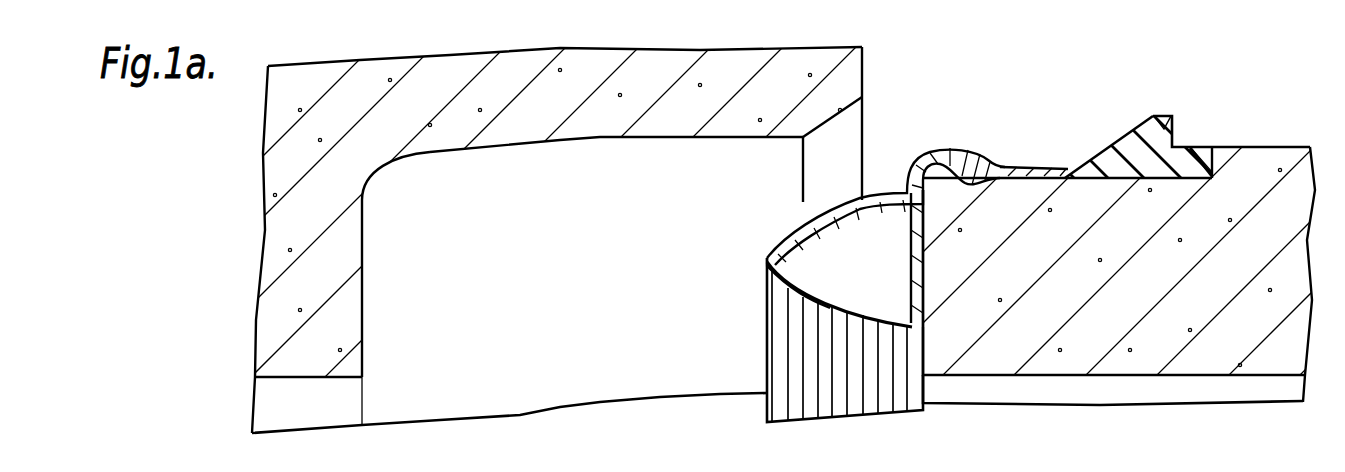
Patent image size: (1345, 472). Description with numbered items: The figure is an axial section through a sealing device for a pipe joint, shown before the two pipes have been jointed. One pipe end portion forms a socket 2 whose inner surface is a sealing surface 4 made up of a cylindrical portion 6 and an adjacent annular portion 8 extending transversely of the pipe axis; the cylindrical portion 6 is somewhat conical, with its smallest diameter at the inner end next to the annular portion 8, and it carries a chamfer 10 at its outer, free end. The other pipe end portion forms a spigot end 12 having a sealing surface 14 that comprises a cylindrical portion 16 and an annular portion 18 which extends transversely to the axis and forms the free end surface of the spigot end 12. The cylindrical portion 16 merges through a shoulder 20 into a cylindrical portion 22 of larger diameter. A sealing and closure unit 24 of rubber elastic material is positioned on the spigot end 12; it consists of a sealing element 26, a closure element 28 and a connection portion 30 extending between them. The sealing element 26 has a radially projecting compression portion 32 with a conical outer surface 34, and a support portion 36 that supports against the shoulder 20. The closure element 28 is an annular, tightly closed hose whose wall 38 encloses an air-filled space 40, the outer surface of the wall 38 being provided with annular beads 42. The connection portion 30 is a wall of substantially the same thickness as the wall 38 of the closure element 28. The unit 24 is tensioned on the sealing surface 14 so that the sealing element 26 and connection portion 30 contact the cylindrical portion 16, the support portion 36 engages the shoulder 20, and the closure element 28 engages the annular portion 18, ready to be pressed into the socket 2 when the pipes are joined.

The socket 2 is at (578, 80).
The sealing surface 4 is at (362, 225).
The cylindrical portion 6 is at (628, 138).
The annular portion 8 is at (363, 352).
The chamfer 10 is at (842, 108).
The spigot end 12 is at (1258, 157).
The sealing surface 14 is at (988, 160).
The cylindrical portion 16 is at (1103, 175).
The annular portion 18 is at (922, 357).
The shoulder 20 is at (1222, 153).
The cylindrical portion 22 is at (1290, 145).
The sealing and closure unit 24 is at (1063, 156).
The sealing element 26 is at (1162, 135).
The closure element 28 is at (765, 265).
The connection portion 30 is at (1030, 170).
The compression portion 32 is at (1162, 113).
The conical outer surface 34 is at (1133, 125).
The support portion 36 is at (1189, 146).
The wall 38 is at (822, 305).
The air-filled space 40 is at (876, 273).
The annular beads 42 is at (831, 211).